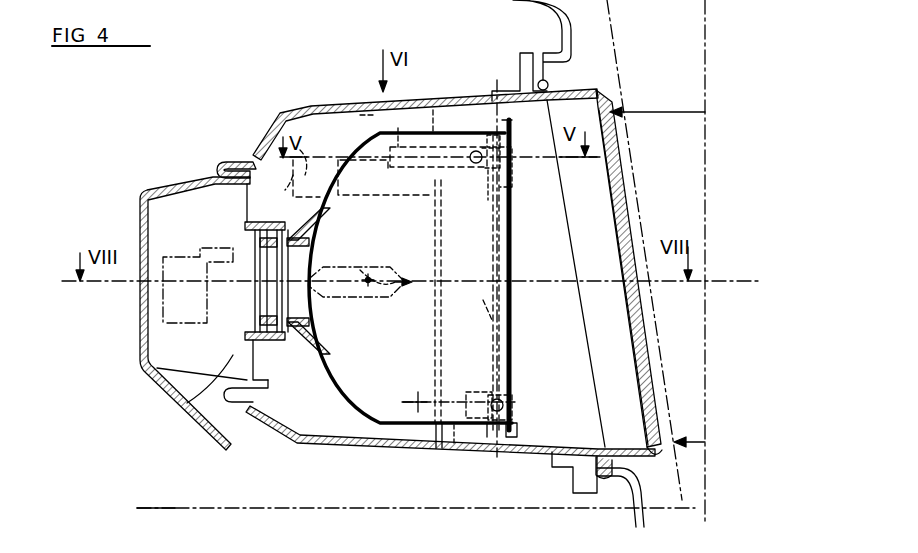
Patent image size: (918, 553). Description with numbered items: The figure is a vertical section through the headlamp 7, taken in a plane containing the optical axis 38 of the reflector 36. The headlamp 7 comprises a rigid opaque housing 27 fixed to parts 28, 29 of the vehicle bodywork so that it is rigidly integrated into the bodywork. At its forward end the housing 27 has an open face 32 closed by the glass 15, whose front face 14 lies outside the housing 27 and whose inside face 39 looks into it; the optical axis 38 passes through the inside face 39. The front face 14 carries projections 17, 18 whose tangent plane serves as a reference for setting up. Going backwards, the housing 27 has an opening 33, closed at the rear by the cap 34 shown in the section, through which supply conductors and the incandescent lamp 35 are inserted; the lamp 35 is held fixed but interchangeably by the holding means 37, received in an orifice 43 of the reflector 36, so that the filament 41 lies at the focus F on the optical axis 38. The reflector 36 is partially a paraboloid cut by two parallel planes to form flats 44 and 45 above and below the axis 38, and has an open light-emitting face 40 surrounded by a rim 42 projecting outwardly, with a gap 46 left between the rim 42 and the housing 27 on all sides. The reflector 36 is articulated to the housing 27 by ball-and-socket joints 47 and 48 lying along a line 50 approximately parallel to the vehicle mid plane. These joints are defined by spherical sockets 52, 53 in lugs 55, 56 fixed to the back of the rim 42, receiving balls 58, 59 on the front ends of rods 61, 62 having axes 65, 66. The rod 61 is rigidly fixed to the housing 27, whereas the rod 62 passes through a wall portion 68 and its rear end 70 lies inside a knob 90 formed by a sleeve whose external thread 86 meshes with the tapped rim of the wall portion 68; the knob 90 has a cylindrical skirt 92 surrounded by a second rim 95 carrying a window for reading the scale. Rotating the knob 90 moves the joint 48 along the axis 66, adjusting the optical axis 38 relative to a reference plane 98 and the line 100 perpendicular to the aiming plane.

The headlamp 7 is at (289, 72).
The front face of the glass 14 is at (640, 182).
The glass 15 is at (655, 330).
The projection of the front face of the glass 17 is at (618, 110).
The projection of the front face of the glass 18 is at (668, 438).
The housing 27 is at (330, 450).
The vehicle bodywork part 28 is at (515, 90).
The vehicle bodywork part 29 is at (568, 458).
The open face 32 is at (592, 350).
The opening 33 is at (188, 404).
The rear cap 34 is at (165, 190).
The incandescent lamp 35 is at (347, 290).
The reflector 36 is at (370, 430).
The lamp holding means 37 is at (315, 305).
The optical axis 38 is at (449, 290).
The inside face of the glass 39 is at (627, 247).
The open face of the reflector 40 is at (516, 313).
The filament 41 is at (383, 293).
The rim 42 is at (518, 430).
The orifice 43 is at (320, 257).
The flat 44 is at (455, 165).
The flat 45 is at (396, 418).
The gap 46 is at (512, 120).
The ball-and-socket joint 47 is at (487, 437).
The ball-and-socket joint 48 is at (509, 200).
The line 50 is at (492, 322).
The spherical socket 52 is at (490, 388).
The spherical socket 53 is at (512, 170).
The lug 55 is at (508, 385).
The lug 56 is at (492, 140).
The spherical ball 58 is at (518, 403).
The spherical ball 59 is at (490, 200).
The rod 61 is at (454, 443).
The rod 62 is at (443, 198).
The rod axis 65 is at (418, 398).
The rod axis 66 is at (296, 175).
The wall portion 68 is at (433, 110).
The rear end of the rod 70 is at (342, 160).
The external thread 86 is at (405, 529).
The knob 90 is at (305, 150).
The cylindrical skirt 92 is at (367, 115).
The second rim 95 is at (398, 128).
The reference plane 98 is at (173, 509).
The line perpendicular to the aiming plane 100 is at (717, 276).
The focus F is at (369, 279).